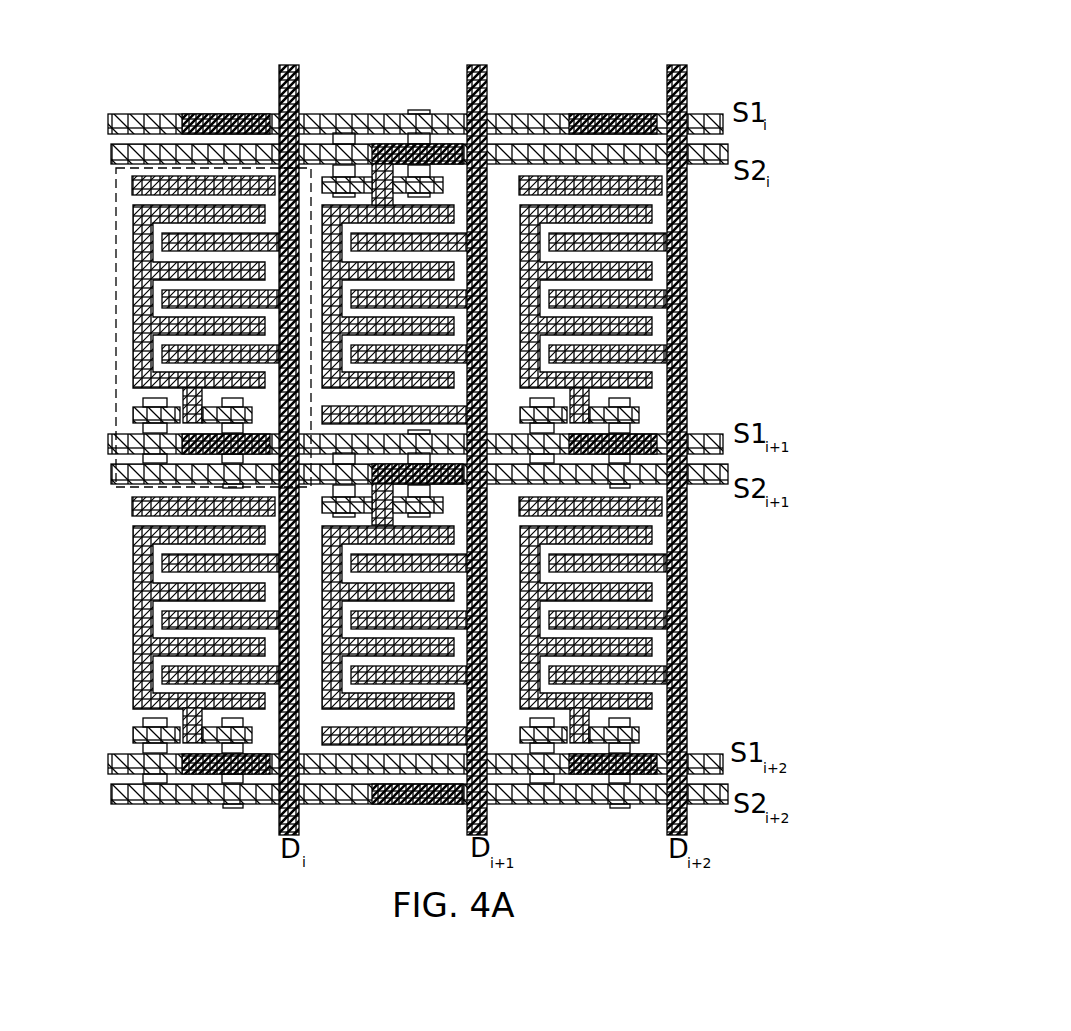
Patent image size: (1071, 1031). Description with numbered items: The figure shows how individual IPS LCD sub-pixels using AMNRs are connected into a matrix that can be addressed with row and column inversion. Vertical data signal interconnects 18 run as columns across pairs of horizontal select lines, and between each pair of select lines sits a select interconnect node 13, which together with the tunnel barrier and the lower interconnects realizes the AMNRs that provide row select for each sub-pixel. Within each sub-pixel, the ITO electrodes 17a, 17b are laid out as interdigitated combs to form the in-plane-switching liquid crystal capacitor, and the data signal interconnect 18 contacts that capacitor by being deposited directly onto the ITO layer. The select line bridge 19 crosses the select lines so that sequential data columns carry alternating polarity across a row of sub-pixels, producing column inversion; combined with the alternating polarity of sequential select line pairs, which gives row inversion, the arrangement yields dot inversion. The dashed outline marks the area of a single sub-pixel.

The select interconnect node 13 is at (327, 177).
The electrode of IPS liquid crystal capacitor 17a is at (655, 208).
The electrode of IPS liquid crystal capacitor 17b is at (133, 250).
The data signal interconnect 18 is at (290, 65).
The select line bridge 19 is at (223, 113).